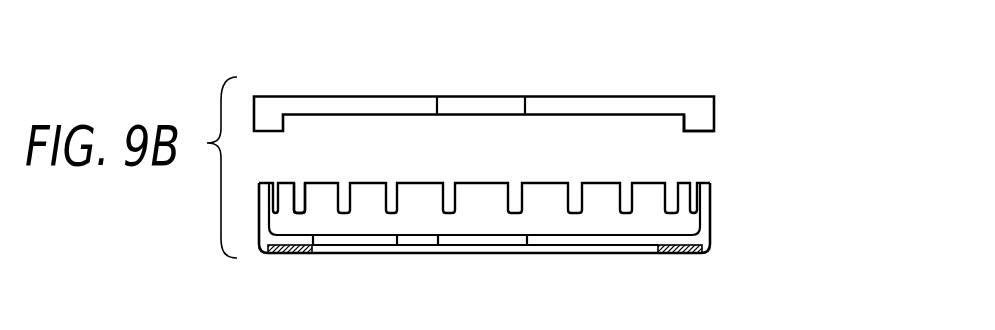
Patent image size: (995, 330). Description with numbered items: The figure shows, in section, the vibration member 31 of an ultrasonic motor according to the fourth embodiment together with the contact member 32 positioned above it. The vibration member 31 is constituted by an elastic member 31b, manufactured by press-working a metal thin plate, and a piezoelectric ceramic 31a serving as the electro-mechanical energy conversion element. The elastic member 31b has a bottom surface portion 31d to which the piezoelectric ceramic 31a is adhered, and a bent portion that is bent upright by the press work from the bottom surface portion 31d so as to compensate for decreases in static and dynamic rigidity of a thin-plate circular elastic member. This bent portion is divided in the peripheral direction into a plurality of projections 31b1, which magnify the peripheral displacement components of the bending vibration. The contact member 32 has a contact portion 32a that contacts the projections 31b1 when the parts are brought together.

The contact member 32 is at (659, 103).
The contact portion 32a is at (701, 131).
The vibration member 31 is at (711, 205).
The projections 31b1 is at (547, 193).
The elastic member 31b is at (703, 225).
The piezoelectric ceramic 31a is at (695, 255).
The bottom surface portion 31d is at (280, 252).